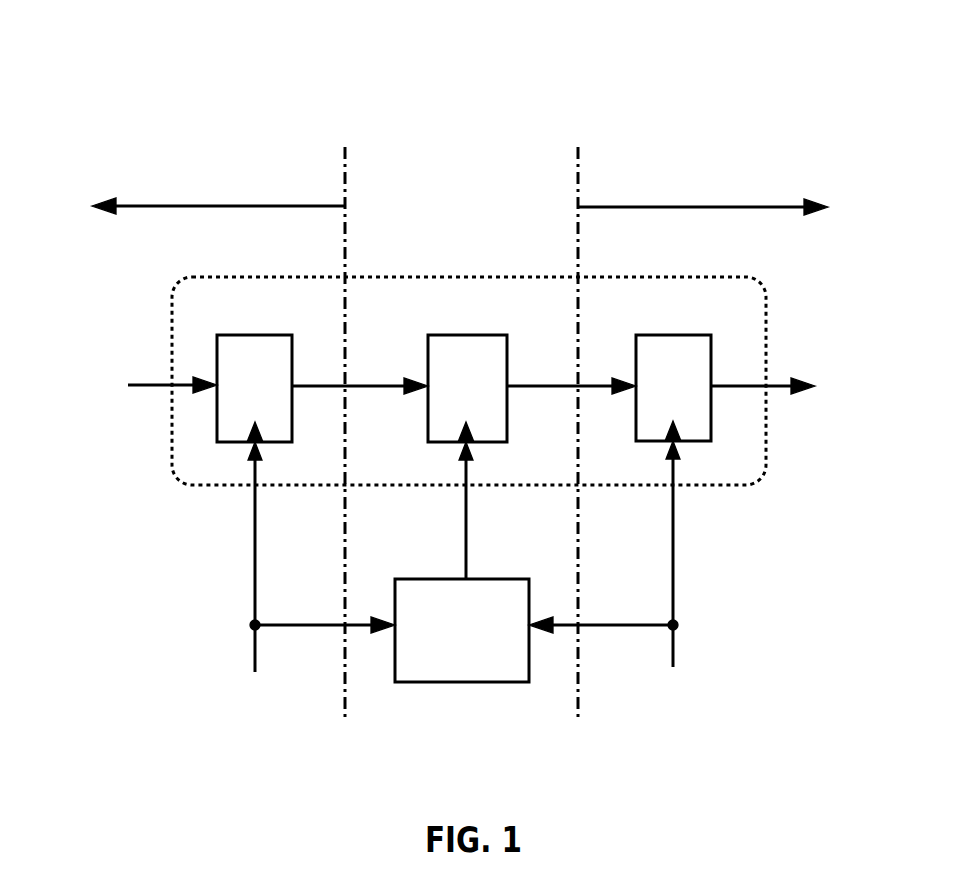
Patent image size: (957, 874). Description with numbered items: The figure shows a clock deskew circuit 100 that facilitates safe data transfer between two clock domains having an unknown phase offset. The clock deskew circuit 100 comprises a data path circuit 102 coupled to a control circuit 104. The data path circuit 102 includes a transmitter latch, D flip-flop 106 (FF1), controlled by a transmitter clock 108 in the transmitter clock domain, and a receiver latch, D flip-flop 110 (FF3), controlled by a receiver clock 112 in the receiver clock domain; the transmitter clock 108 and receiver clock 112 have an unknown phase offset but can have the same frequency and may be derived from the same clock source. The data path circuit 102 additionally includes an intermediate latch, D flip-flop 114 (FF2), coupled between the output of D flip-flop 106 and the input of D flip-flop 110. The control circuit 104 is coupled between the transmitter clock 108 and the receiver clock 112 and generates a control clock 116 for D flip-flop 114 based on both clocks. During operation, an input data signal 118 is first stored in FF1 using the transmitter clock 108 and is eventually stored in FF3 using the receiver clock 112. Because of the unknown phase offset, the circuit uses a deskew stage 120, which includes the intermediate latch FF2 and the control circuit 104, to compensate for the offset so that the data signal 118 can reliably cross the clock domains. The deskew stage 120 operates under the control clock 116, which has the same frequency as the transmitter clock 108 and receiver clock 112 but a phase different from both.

The clock deskew circuit 100 is at (608, 50).
The data path circuit 102 is at (624, 276).
The control circuit 104 is at (462, 630).
The D flip-flop 106 is at (260, 363).
The transmitter clock 108 is at (288, 597).
The D flip-flop 110 is at (673, 363).
The receiver clock 112 is at (628, 596).
The D flip-flop 114 is at (470, 363).
The control clock 116 is at (467, 565).
The data signal 118 is at (150, 385).
The deskew stage 120 is at (461, 432).